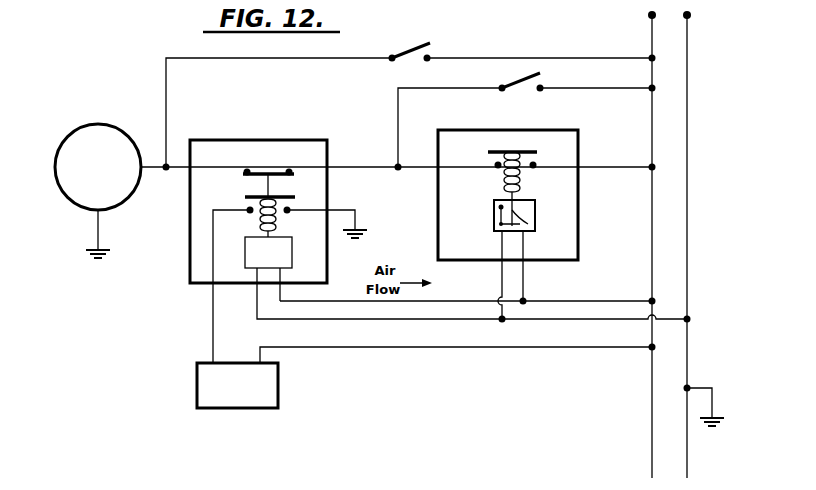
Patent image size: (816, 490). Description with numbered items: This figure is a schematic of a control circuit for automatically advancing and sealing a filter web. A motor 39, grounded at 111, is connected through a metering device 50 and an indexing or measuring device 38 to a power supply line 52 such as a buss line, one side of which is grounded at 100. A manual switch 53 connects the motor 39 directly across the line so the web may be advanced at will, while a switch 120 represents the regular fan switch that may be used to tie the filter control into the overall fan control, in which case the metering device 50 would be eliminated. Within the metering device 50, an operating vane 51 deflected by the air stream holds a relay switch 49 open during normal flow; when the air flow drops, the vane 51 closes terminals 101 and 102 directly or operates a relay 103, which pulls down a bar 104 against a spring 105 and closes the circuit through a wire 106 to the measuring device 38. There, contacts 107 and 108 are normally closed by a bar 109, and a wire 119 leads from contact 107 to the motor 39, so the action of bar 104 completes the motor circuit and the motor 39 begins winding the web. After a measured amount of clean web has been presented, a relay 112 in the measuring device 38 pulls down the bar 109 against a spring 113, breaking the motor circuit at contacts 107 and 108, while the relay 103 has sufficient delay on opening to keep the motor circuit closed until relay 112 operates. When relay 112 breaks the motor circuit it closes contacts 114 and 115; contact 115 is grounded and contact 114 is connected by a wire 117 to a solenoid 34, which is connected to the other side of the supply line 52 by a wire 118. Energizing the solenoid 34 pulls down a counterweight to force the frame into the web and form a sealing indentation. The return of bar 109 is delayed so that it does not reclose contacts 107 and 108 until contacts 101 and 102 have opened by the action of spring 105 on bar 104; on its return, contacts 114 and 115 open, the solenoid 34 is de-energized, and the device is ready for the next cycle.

The motor 39 is at (68, 152).
The ground 111 is at (100, 258).
The wire 119 is at (170, 171).
The wire 106 is at (366, 167).
The switch 53 is at (419, 48).
The switch 120 is at (516, 80).
The measuring device 38 is at (320, 272).
The contact 107 is at (245, 170).
The contact 108 is at (288, 170).
The bar 109 is at (272, 172).
The spring 113 is at (274, 226).
The contact 114 is at (248, 208).
The contact 115 is at (289, 208).
The relay 112 is at (252, 250).
The wire 117 is at (213, 328).
The wire 118 is at (400, 348).
The solenoid 34 is at (194, 398).
The metering device 50 is at (578, 148).
The bar 104 is at (502, 150).
The spring 105 is at (508, 188).
The terminal 101 is at (496, 170).
The terminal 102 is at (533, 168).
The relay 103 is at (535, 228).
The relay switch 49 is at (496, 220).
The vane 51 is at (500, 277).
The supply line 52 is at (652, 440).
The ground 100 is at (718, 432).